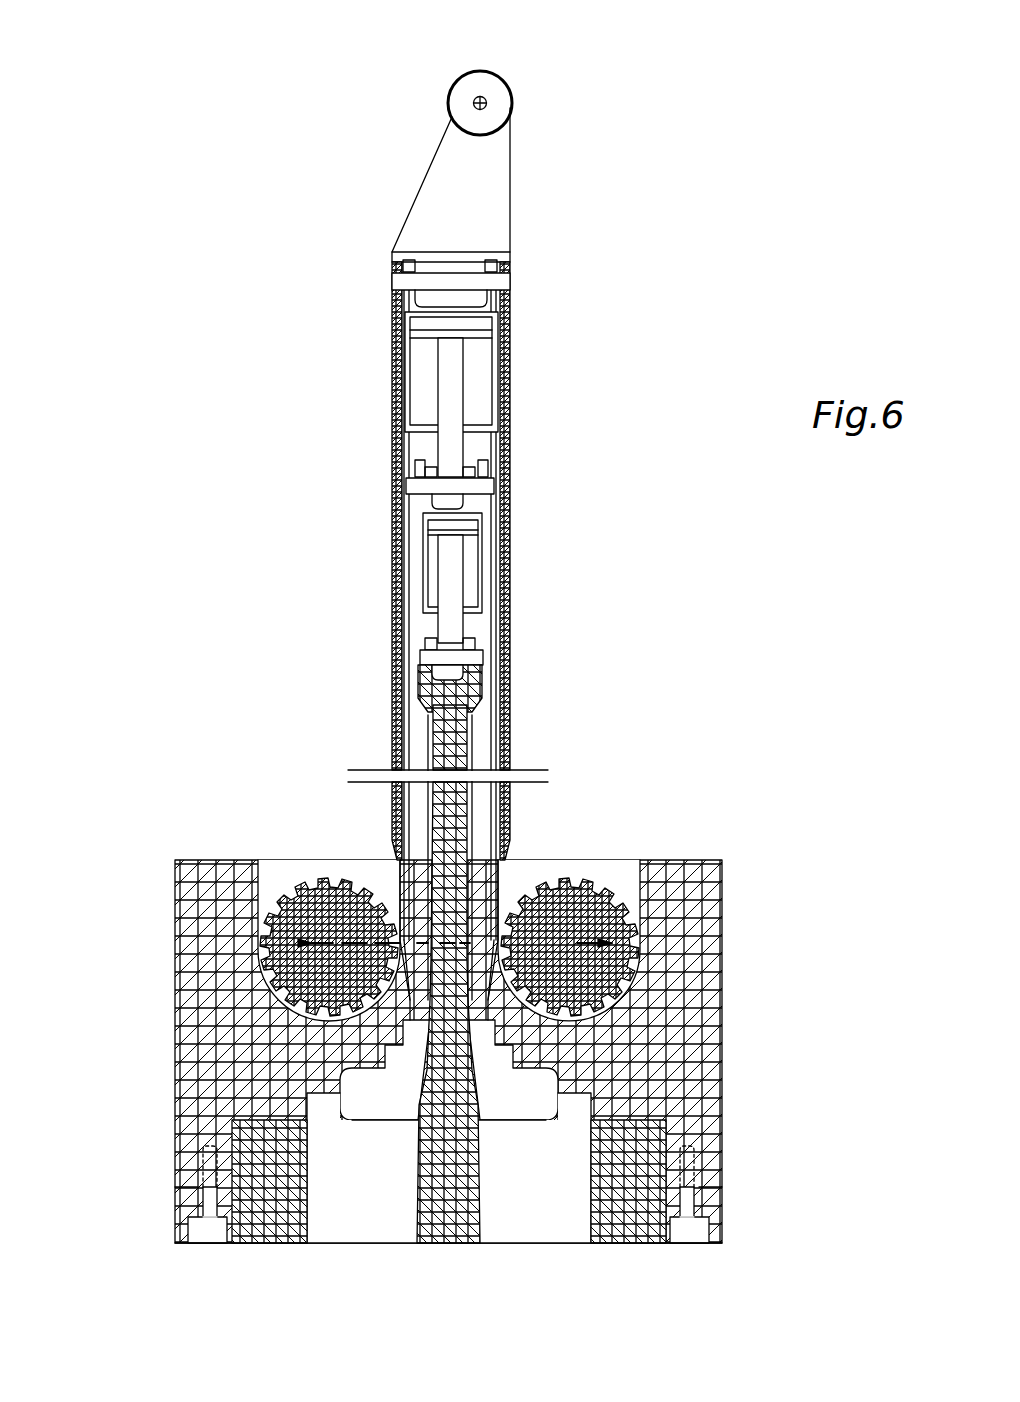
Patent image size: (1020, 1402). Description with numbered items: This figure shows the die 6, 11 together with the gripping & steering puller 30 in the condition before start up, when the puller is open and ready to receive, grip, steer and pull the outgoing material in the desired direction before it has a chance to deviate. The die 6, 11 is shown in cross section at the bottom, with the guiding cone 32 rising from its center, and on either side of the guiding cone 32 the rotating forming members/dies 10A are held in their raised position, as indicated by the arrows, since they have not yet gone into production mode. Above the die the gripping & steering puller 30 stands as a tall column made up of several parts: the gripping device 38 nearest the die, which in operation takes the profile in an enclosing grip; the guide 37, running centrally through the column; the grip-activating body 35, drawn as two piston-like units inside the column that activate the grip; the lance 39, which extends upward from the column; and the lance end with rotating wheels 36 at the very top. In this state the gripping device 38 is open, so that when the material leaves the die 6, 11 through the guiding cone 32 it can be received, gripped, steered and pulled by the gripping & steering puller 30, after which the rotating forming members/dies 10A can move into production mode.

The die 6 is at (212, 1052).
The rotating forming members/dies 10A is at (293, 897).
The die 11 is at (457, 1225).
The gripping & steering puller 30 is at (297, 561).
The guiding cone 32 is at (445, 925).
The grip-activating body 35 is at (490, 500).
The rotating wheels 36 is at (480, 102).
The guide 37 is at (465, 785).
The gripping device 38 is at (403, 880).
The lance 39 is at (392, 480).